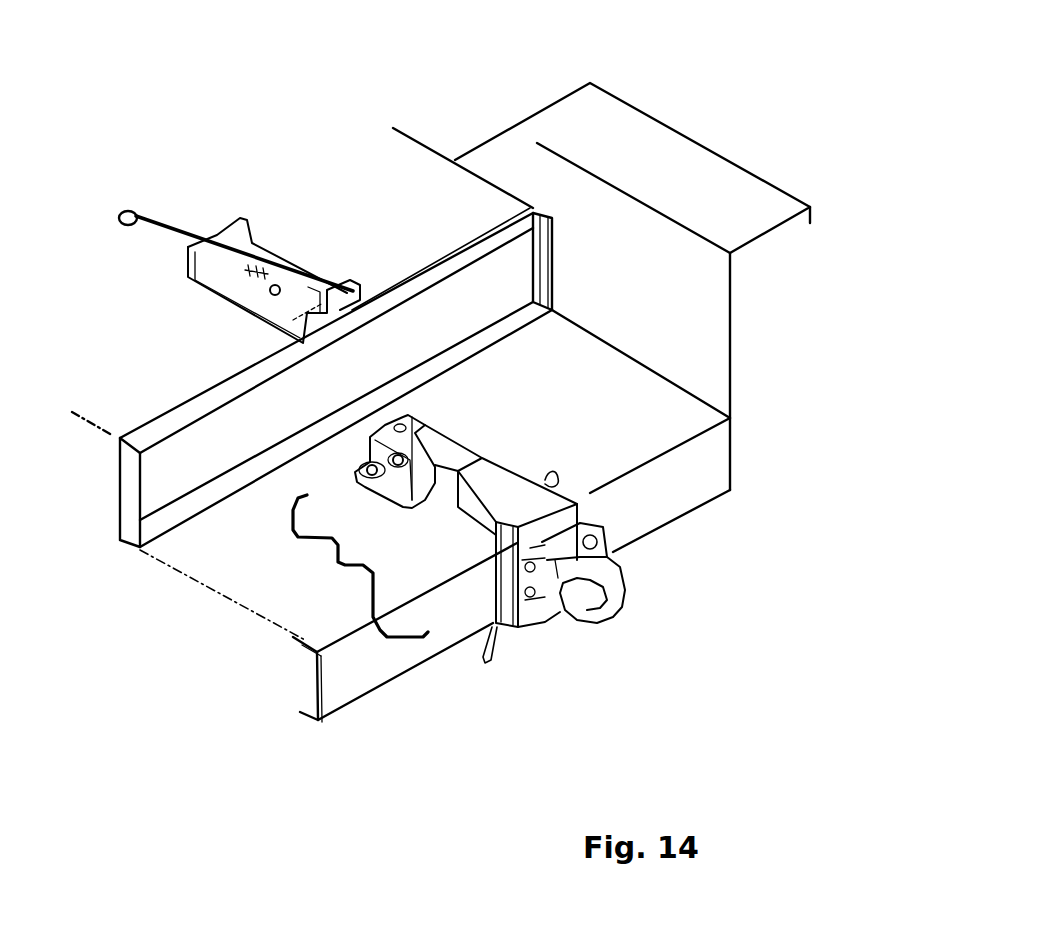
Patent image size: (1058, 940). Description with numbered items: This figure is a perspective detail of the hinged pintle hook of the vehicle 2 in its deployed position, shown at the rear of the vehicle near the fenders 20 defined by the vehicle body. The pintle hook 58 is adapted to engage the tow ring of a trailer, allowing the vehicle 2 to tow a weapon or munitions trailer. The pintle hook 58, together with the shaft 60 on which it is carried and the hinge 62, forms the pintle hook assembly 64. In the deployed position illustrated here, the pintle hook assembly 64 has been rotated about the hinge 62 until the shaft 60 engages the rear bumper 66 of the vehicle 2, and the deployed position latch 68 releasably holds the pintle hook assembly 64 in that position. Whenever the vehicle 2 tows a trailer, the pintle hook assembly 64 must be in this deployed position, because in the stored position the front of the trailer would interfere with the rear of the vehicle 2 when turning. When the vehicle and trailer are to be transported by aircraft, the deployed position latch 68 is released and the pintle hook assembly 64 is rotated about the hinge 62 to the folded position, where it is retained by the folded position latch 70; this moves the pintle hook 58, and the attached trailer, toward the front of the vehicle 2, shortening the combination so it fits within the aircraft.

The vehicle 2 is at (730, 345).
The fenders 20 is at (700, 193).
The pintle hook 58 is at (610, 618).
The shaft 60 is at (580, 505).
The hinge 62 is at (367, 455).
The pintle hook assembly 64 is at (338, 565).
The rear bumper 66 is at (388, 648).
The deployed position latch 68 is at (493, 623).
The folded position latch 70 is at (280, 265).